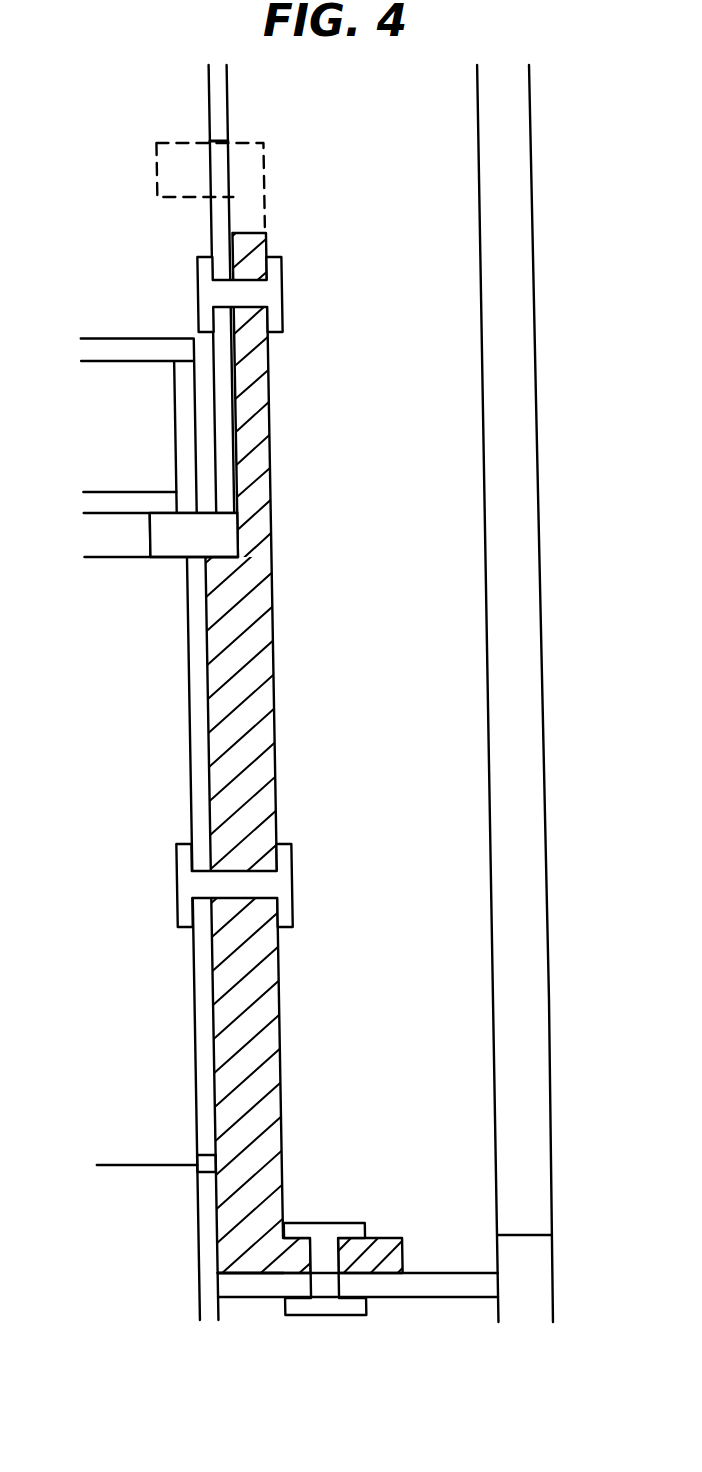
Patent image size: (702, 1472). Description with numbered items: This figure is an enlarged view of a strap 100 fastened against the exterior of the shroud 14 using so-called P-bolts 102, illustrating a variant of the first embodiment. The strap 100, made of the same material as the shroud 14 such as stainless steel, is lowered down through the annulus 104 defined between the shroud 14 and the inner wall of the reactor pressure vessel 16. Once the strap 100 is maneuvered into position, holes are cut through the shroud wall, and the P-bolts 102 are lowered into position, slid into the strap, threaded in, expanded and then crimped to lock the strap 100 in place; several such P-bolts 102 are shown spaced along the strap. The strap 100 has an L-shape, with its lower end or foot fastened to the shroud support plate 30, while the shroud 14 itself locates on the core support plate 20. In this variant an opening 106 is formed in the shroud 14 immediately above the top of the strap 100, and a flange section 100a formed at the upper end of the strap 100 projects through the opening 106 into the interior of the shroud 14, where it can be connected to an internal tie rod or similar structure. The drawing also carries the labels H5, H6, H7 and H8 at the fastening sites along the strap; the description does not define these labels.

The shroud 14 is at (178, 678).
The reactor pressure vessel 16 is at (476, 535).
The core support plate 20 is at (94, 363).
The shroud support plate 30 is at (420, 1272).
The strap 100 is at (259, 775).
The flange section 100a is at (162, 163).
The P-bolt 102 is at (204, 291).
The annulus 104 is at (442, 393).
The opening 106 is at (214, 141).
The mounting hole H5 is at (214, 512).
The mounting hole H6 is at (176, 560).
The mounting hole H7 is at (177, 1158).
The mounting hole H8 is at (195, 1273).